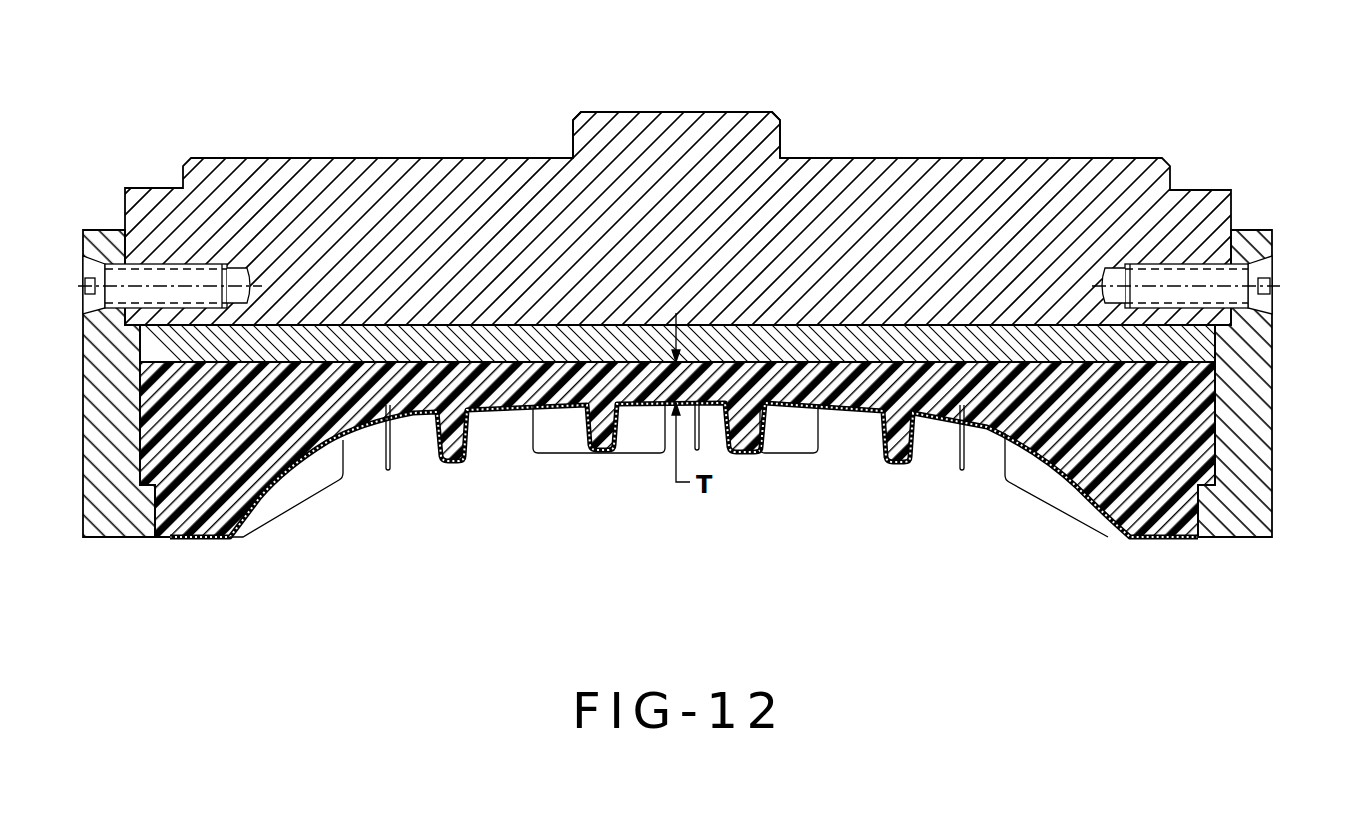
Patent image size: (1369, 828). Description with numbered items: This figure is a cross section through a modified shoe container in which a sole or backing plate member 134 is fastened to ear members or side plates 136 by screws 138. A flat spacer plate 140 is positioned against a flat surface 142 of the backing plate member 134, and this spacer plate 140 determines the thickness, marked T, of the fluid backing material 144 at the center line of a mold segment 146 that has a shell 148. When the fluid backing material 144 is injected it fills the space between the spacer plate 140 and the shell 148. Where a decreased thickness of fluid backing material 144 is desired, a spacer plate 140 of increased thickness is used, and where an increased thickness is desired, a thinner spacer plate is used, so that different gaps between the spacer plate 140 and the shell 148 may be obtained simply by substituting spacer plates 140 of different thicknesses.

The backing plate member 134 is at (695, 133).
The side plates 136 is at (1247, 395).
The screws 138 is at (93, 268).
The spacer plate 140 is at (150, 337).
The flat surface 142 is at (148, 371).
The fluid backing material 144 is at (502, 378).
The mold segment 146 is at (192, 518).
The shell 148 is at (265, 497).